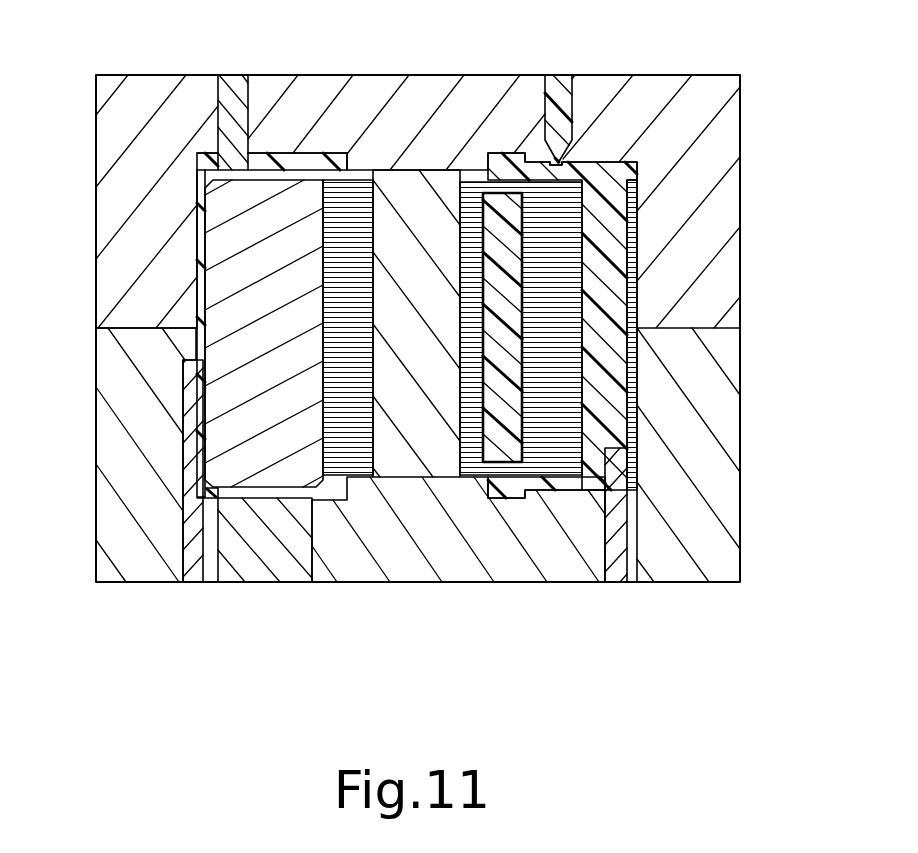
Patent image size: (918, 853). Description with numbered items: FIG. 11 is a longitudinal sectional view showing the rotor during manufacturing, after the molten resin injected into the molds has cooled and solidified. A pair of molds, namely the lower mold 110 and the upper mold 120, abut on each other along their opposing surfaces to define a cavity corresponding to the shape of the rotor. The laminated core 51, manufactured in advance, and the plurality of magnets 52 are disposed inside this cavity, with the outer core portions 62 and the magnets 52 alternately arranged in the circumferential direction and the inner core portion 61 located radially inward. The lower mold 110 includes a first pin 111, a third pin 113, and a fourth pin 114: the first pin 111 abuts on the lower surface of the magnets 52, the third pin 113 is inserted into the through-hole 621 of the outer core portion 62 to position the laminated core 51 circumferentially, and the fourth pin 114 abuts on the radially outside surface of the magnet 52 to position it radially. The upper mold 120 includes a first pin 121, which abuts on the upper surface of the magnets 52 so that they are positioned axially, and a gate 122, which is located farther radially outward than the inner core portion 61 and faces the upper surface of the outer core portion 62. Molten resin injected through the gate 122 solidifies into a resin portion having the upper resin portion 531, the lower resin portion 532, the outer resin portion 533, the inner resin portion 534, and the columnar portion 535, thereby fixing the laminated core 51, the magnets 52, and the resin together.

The lower mold 110 is at (370, 535).
The first pin 111 is at (260, 555).
The third pin 113 is at (612, 565).
The fourth pin 114 is at (192, 563).
The upper mold 120 is at (432, 135).
The first pin 121 is at (237, 97).
The gate 122 is at (552, 139).
The laminated core 51 is at (452, 424).
The magnets 52 is at (275, 212).
The inner core portion 61 is at (470, 425).
The outer core portion 62 is at (548, 425).
The upper resin portion 531 is at (290, 165).
The lower resin portion 532 is at (562, 480).
The outer resin portion 533 is at (197, 243).
The inner resin portion 534 is at (505, 400).
The columnar portion 535 is at (605, 240).
The through-hole 621 is at (613, 310).